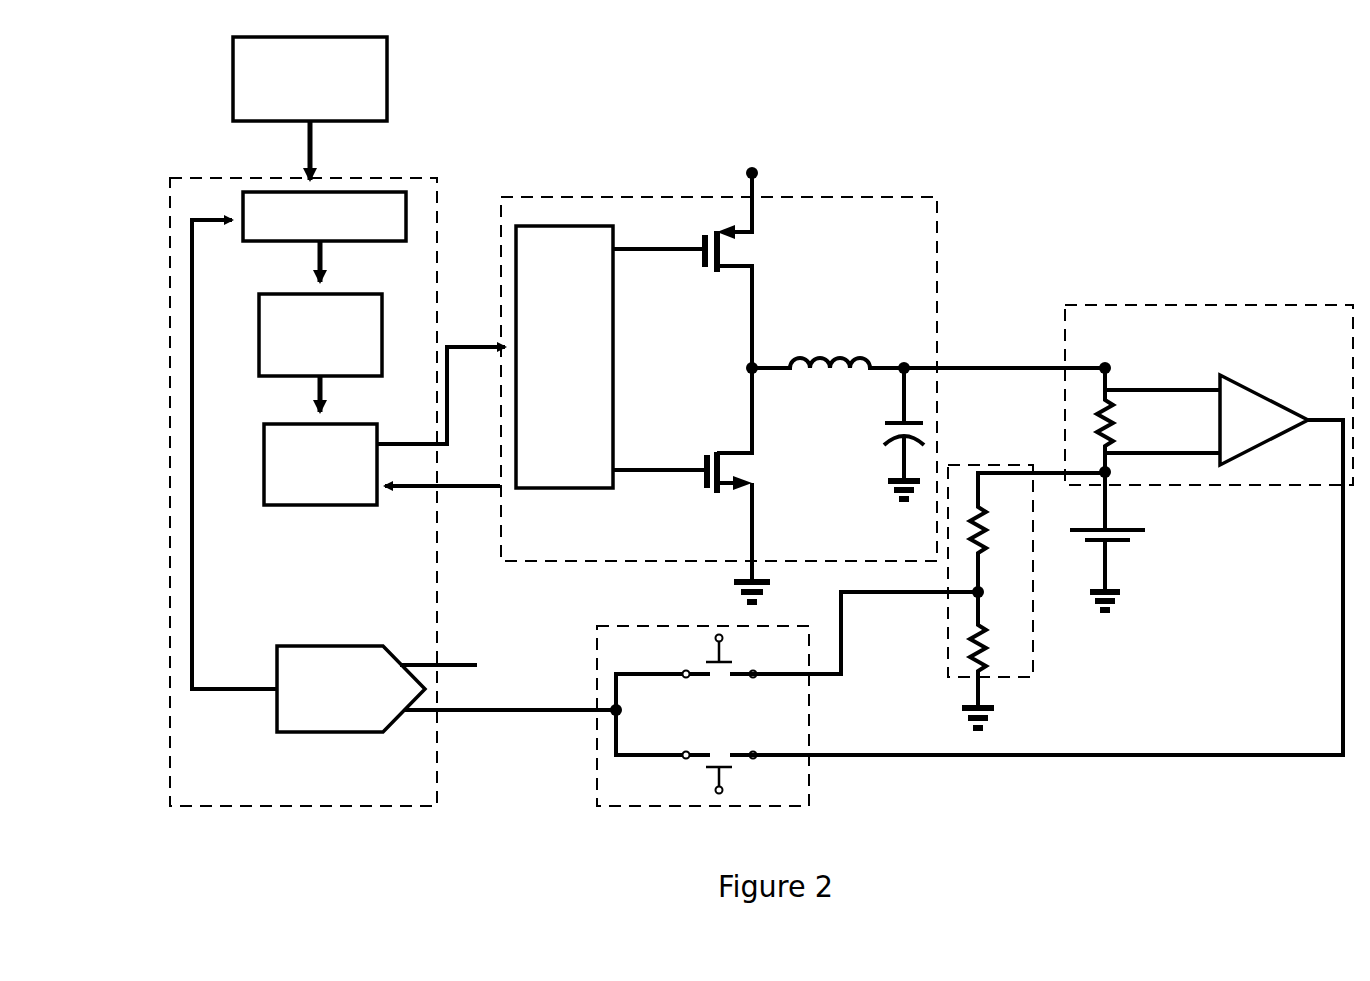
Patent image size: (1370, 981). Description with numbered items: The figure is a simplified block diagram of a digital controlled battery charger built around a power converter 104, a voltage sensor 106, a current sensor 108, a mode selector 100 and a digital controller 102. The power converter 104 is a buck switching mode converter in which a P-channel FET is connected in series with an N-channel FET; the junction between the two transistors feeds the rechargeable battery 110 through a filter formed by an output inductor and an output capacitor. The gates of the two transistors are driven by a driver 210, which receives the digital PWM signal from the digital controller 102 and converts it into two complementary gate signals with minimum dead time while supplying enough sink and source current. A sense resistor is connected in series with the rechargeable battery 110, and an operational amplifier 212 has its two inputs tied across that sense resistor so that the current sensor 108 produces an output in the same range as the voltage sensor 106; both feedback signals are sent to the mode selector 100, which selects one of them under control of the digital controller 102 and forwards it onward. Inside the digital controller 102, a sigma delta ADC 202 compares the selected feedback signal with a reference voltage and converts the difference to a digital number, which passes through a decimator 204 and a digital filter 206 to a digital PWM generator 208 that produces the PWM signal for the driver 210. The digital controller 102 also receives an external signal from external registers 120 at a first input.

The mode selector 100 is at (603, 806).
The digital controller 102 is at (345, 806).
The power converter 104 is at (535, 561).
The voltage sensor 106 is at (1018, 677).
The current sensor 108 is at (1250, 485).
The rechargeable battery 110 is at (1075, 540).
The external registers 120 is at (233, 121).
The sigma delta analog-to-digital converter 202 is at (300, 732).
The decimator 204 is at (248, 241).
The digital filter 206 is at (262, 376).
The digital PWM generator 208 is at (330, 505).
The driver 210 is at (578, 488).
The operational amplifier 212 is at (1278, 400).